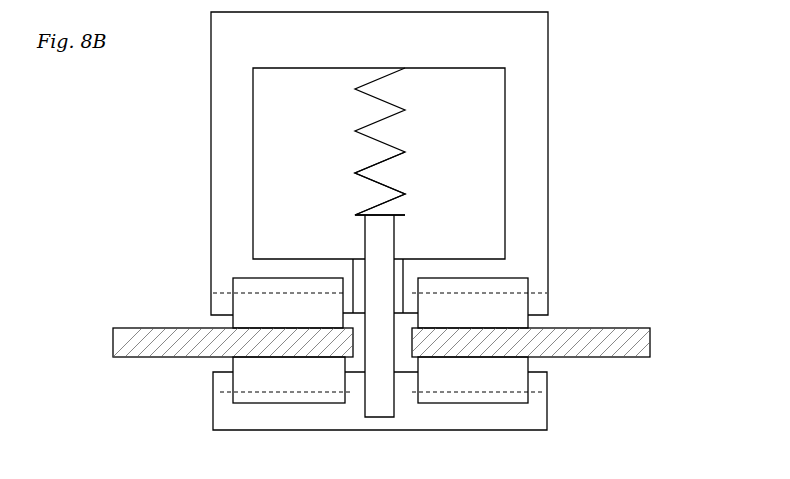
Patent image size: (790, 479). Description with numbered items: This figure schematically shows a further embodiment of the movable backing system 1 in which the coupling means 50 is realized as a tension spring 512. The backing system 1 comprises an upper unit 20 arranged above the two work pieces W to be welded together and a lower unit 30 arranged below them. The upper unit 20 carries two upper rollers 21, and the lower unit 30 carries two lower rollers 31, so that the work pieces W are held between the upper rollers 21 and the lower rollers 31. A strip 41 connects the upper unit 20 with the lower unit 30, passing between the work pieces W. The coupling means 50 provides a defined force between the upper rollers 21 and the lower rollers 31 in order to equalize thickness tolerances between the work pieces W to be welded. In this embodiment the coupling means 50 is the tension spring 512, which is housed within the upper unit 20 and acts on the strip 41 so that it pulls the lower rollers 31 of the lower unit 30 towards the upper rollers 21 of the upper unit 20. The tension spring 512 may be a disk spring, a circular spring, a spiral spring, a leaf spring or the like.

The movable backing system 1 is at (588, 26).
The upper unit 20 is at (230, 242).
The upper rollers 21 is at (255, 311).
The lower unit 30 is at (250, 417).
The lower rollers 31 is at (267, 373).
The strip 41 is at (380, 268).
The coupling means 50 is at (380, 130).
The tension spring 512 is at (378, 168).
The work pieces W is at (150, 333).